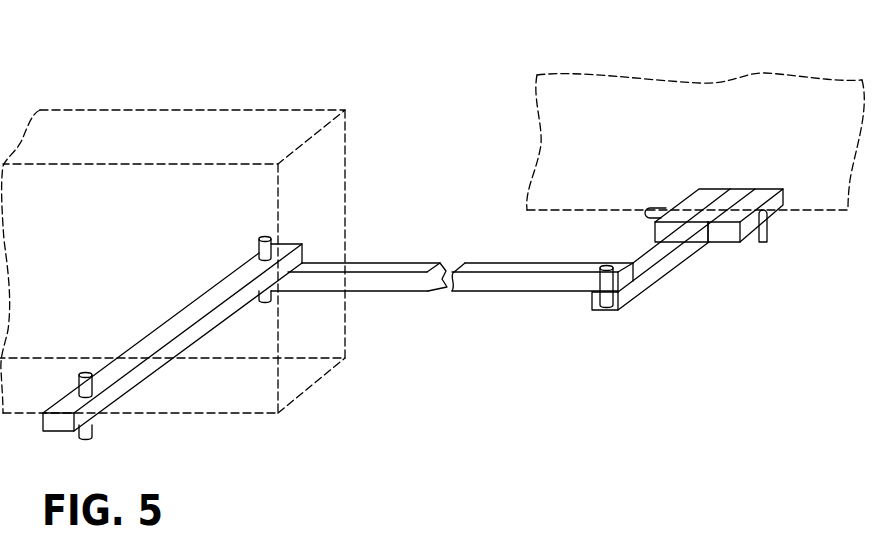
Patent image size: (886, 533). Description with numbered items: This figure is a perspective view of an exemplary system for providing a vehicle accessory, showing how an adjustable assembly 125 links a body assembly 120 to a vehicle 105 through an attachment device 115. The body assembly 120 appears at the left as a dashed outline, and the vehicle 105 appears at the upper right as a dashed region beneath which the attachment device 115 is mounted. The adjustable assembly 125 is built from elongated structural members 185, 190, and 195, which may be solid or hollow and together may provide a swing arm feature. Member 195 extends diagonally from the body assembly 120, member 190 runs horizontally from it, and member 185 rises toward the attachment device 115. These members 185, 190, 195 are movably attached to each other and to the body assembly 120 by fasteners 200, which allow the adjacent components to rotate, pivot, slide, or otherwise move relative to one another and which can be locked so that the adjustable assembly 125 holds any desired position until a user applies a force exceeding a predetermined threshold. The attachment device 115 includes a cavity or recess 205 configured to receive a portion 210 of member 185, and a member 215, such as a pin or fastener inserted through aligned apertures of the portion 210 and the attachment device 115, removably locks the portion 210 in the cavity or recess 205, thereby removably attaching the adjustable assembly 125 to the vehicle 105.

The vehicle 105 is at (642, 150).
The attachment device 115 is at (757, 166).
The body assembly 120 is at (154, 83).
The adjustable assembly 125 is at (513, 314).
The member 185 is at (650, 275).
The member 190 is at (480, 268).
The member 195 is at (188, 335).
The fastener 200 is at (263, 236).
The cavity or recess 205 is at (742, 256).
The portion of member 210 is at (714, 263).
The member 215 is at (769, 225).